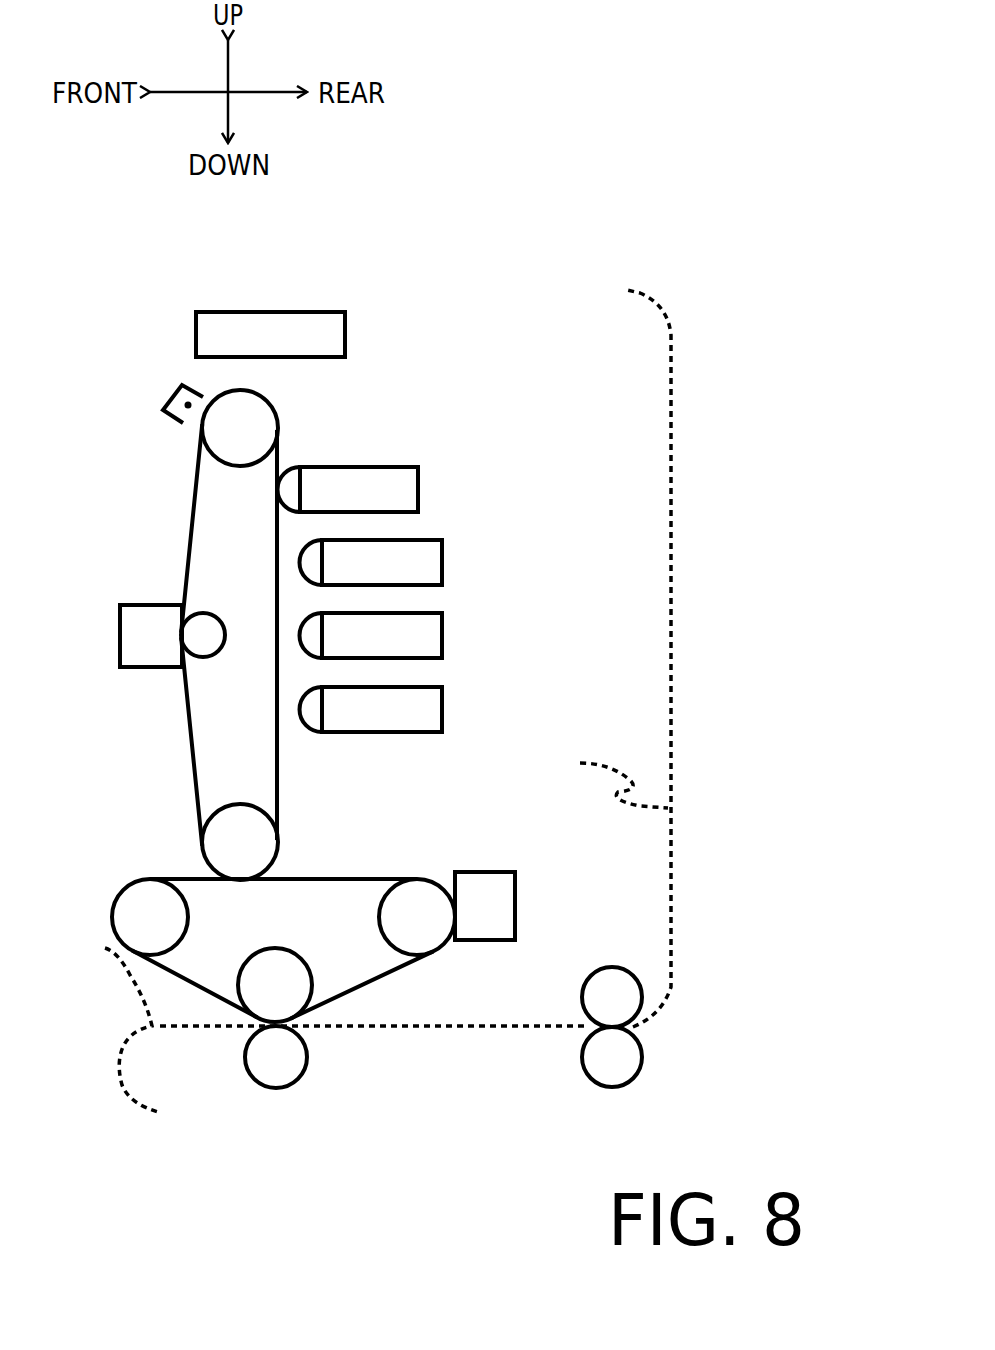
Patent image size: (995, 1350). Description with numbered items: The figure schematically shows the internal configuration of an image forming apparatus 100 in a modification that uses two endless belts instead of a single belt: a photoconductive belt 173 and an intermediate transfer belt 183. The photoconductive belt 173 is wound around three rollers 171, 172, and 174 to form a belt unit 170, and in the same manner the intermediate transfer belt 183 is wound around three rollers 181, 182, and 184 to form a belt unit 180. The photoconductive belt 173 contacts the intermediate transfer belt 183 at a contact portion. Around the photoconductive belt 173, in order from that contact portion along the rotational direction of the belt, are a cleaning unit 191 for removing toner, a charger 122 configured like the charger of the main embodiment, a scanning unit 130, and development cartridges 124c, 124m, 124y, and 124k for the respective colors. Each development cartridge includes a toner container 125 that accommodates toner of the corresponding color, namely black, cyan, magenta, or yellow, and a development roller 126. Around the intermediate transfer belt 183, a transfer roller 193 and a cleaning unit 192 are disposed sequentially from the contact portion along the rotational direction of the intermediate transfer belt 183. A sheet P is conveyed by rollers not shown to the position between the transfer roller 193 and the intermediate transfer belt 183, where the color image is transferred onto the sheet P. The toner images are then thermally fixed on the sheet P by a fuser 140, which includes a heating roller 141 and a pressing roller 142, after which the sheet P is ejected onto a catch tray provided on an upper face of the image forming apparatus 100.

The image forming apparatus 100 is at (193, 287).
The charger 122 is at (169, 398).
The development cartridge 124c is at (394, 457).
The development cartridge 124m is at (441, 533).
The development cartridge 124y is at (442, 608).
The development cartridge 124k is at (442, 681).
The toner container 125 is at (328, 487).
The development roller 126 is at (290, 485).
The scanning unit 130 is at (297, 322).
The fuser 140 is at (613, 1008).
The heating roller 141 is at (612, 982).
The pressing roller 142 is at (613, 1073).
The belt unit 170 is at (235, 626).
The roller 171 is at (252, 428).
The roller 172 is at (225, 842).
The photoconductive belt 173 is at (190, 520).
The roller 174 is at (203, 640).
The belt unit 180 is at (298, 934).
The roller 181 is at (162, 905).
The roller 182 is at (400, 923).
The intermediate transfer belt 183 is at (318, 878).
The roller 184 is at (280, 980).
The cleaning unit 191 is at (162, 613).
The cleaning unit 192 is at (472, 878).
The transfer roller 193 is at (293, 1070).
The sheet P is at (381, 701).